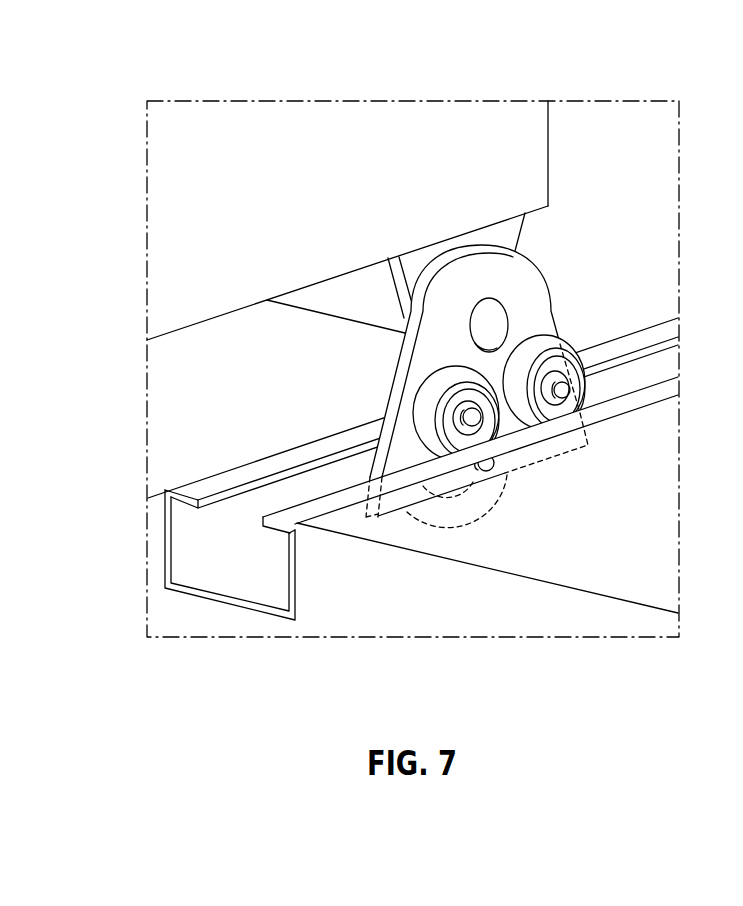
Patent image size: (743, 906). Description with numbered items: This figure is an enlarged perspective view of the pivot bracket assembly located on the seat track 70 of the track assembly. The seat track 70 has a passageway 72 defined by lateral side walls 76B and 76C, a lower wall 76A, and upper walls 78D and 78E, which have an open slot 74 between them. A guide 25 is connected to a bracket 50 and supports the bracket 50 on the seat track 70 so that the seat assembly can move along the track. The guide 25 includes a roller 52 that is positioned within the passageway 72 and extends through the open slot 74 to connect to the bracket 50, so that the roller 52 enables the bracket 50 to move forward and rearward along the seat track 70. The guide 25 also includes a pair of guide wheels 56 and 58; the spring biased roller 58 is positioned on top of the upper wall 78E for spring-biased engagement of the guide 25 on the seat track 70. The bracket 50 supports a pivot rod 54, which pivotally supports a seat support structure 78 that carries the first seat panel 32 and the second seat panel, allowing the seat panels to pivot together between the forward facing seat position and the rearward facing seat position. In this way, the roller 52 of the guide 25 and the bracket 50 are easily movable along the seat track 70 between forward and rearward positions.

The guide 25 is at (579, 289).
The first seat panel 32 is at (518, 152).
The bracket 50 is at (531, 290).
The roller 52 is at (490, 498).
The pivot rod 54 is at (356, 297).
The guide wheel 56 is at (567, 366).
The spring biased roller 58 is at (443, 388).
The seat track 70 is at (190, 475).
The passageway 72 is at (233, 600).
The open slot 74 is at (243, 489).
The lower wall 76A is at (257, 596).
The lateral side wall 76B is at (170, 530).
The lateral side wall 76C is at (291, 570).
The seat support structure 78 is at (413, 338).
The upper wall 78D is at (298, 462).
The upper wall 78E is at (326, 510).